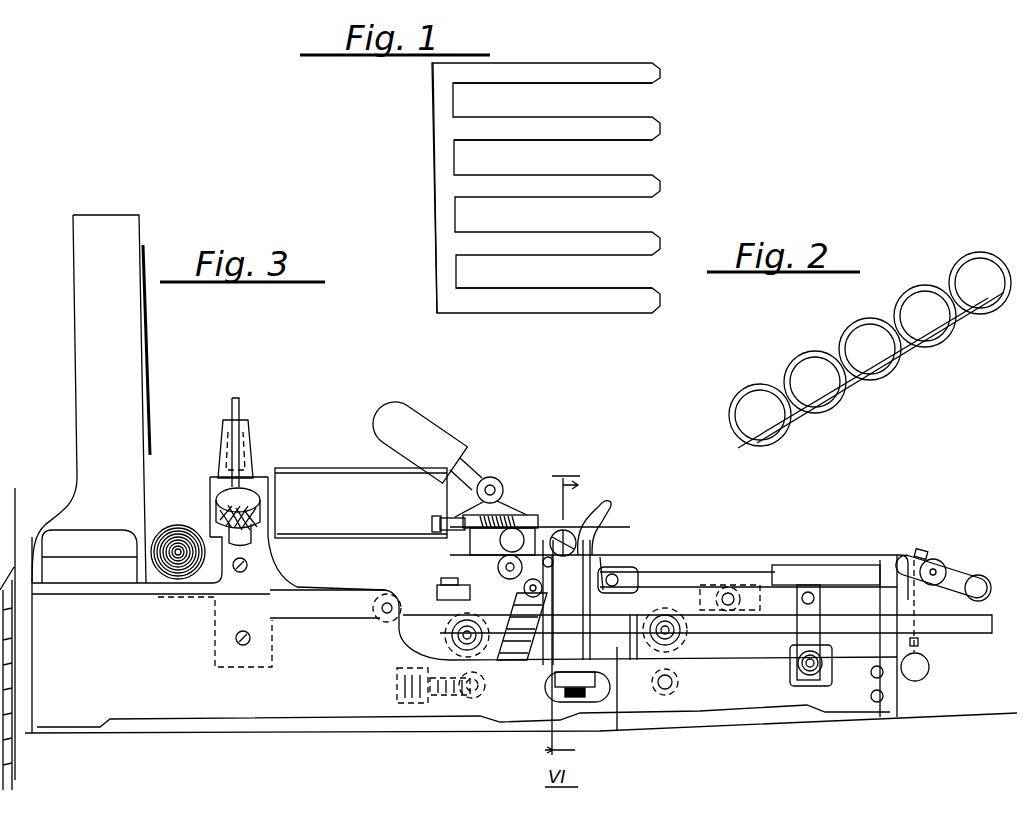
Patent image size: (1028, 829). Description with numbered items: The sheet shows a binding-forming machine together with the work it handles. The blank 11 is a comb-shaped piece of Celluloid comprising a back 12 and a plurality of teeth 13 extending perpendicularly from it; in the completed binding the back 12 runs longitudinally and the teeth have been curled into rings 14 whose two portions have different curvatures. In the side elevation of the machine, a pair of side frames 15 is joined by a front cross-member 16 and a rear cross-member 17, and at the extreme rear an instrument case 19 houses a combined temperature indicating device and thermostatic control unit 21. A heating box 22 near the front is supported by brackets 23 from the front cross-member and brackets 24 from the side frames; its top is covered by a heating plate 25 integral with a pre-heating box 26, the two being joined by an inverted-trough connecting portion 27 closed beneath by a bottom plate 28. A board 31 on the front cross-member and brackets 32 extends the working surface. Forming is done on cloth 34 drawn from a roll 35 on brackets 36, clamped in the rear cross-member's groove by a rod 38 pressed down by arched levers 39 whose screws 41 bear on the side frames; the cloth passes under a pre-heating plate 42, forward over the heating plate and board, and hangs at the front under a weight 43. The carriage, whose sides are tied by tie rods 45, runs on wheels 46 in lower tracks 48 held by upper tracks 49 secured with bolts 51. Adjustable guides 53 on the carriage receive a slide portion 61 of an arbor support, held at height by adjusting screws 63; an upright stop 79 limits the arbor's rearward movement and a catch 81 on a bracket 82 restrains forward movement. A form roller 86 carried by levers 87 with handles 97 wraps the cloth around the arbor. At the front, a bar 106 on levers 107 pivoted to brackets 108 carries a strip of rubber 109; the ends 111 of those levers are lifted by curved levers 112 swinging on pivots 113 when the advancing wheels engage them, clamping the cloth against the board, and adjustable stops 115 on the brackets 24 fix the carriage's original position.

In FIG. 1, the blank 11 is at (421, 139).
In FIG. 1, the back 12 is at (437, 188).
In FIG. 2, the back 12 is at (868, 372).
In FIG. 1, the teeth 13 is at (537, 82).
In FIG. 2, the rings 14 is at (770, 384).
In FIG. 3, the side frames 15 is at (180, 705).
In FIG. 3, the front cross-member 16 is at (890, 623).
In FIG. 3, the rear cross-member 17 is at (252, 658).
In FIG. 3, the instrument case 19 is at (100, 408).
In FIG. 3, the combined temperature indicating device and thermostatic control unit 21 is at (148, 402).
In FIG. 3, the heating box 22 is at (710, 582).
In FIG. 3, the brackets 23 is at (842, 652).
In FIG. 3, the brackets 24 is at (402, 705).
In FIG. 3, the heating plate 25 is at (697, 560).
In FIG. 3, the pre-heating box 26 is at (303, 497).
In FIG. 3, the connecting portion 27 is at (452, 548).
In FIG. 3, the bottom plate 28 is at (388, 537).
In FIG. 3, the board 31 is at (847, 565).
In FIG. 3, the brackets 32 is at (792, 578).
In FIG. 3, the cloth 34 is at (628, 567).
In FIG. 3, the roll 35 is at (178, 540).
In FIG. 3, the brackets 36 is at (178, 590).
In FIG. 3, the rod 38 is at (253, 466).
In FIG. 3, the arched levers 39 is at (243, 432).
In FIG. 3, the screw 41 is at (215, 497).
In FIG. 3, the pre-heating plate 42 is at (362, 473).
In FIG. 3, the weight 43 is at (920, 672).
In FIG. 3, the tie rods 45 is at (667, 700).
In FIG. 3, the wheels 46 is at (690, 648).
In FIG. 3, the tracks 48 is at (697, 628).
In FIG. 3, the upper tracks 49 is at (658, 580).
In FIG. 3, the bolts 51 is at (382, 610).
In FIG. 3, the guides 53 is at (603, 535).
In FIG. 3, the slide portion 61 is at (590, 627).
In FIG. 3, the adjusting screws 63 is at (565, 705).
In FIG. 3, the upright stop 79 is at (546, 528).
In FIG. 3, the catch 81 is at (560, 530).
In FIG. 3, the bracket 82 is at (442, 592).
In FIG. 3, the form roller 86 is at (491, 477).
In FIG. 3, the levers 87 is at (488, 478).
In FIG. 3, the handles 97 is at (424, 440).
In FIG. 3, the bar 106 is at (945, 560).
In FIG. 3, the levers 107 is at (960, 575).
In FIG. 3, the brackets 108 is at (940, 584).
In FIG. 3, the strip of rubber 109 is at (925, 548).
In FIG. 3, the ends 111 is at (980, 580).
In FIG. 3, the levers 112 is at (932, 622).
In FIG. 3, the pivots 113 is at (735, 595).
In FIG. 3, the adjustable stops 115 is at (435, 700).